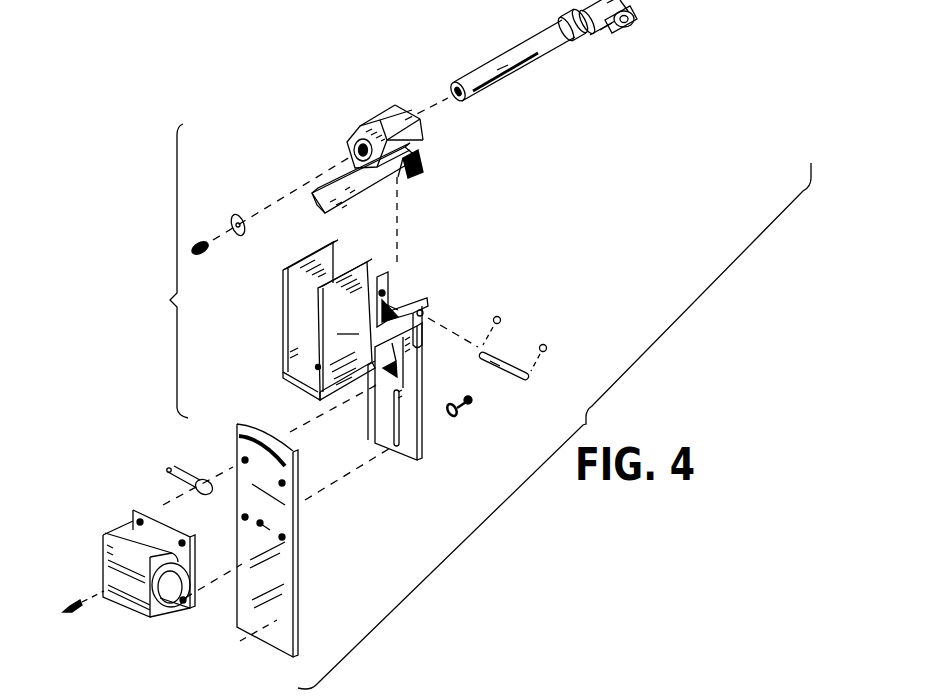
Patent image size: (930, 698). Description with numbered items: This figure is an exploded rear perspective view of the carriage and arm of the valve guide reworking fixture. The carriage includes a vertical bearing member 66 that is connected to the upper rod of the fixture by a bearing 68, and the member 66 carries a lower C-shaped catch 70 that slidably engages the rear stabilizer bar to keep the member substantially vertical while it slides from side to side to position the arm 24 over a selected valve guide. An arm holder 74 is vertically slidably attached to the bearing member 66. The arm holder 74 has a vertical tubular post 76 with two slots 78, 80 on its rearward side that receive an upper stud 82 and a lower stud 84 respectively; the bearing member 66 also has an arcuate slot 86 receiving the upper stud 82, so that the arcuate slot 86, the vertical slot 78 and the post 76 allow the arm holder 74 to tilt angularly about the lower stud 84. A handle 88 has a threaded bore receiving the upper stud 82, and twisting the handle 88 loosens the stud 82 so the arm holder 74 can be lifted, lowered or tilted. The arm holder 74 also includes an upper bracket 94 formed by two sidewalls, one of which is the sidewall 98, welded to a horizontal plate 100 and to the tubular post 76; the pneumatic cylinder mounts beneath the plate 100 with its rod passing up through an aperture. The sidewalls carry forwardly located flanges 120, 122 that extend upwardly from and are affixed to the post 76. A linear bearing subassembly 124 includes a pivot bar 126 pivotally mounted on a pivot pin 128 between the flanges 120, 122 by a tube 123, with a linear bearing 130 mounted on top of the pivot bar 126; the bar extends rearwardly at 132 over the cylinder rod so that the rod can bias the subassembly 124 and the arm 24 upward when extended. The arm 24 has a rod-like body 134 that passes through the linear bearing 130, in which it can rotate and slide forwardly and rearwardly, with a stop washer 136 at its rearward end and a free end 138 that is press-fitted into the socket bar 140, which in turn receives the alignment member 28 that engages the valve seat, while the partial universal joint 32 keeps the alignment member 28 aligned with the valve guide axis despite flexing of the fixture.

The arm 24 is at (488, 63).
The alignment member 28 is at (621, 31).
The partial universal joint 32 is at (647, 16).
The vertical bearing member 66 is at (297, 577).
The bearing 68 is at (100, 572).
The C-shaped catch 70 is at (238, 640).
The arm holder 74 is at (155, 271).
The vertical tubular post 76 is at (421, 439).
The slot 78 is at (399, 373).
The slot 80 is at (395, 437).
The upper stud 82 is at (393, 380).
The lower stud 84 is at (464, 407).
The arcuate slot 86 is at (238, 437).
The handle 88 is at (180, 452).
The upper bracket 94 is at (281, 309).
The sidewall 98 is at (344, 325).
The horizontal plate 100 is at (285, 389).
The flange 120 is at (388, 283).
The flange 122 is at (426, 310).
The tube 123 is at (418, 176).
The linear bearing subassembly 124 is at (391, 103).
The pivot bar 126 is at (350, 196).
The pivot pin 128 is at (510, 372).
The linear bearing 130 is at (372, 127).
The rearward extension of pivot bar 132 is at (318, 215).
The rod-like body 134 is at (497, 74).
The stop washer 136 is at (240, 220).
The free end 138 is at (562, 19).
The socket bar 140 is at (596, 30).